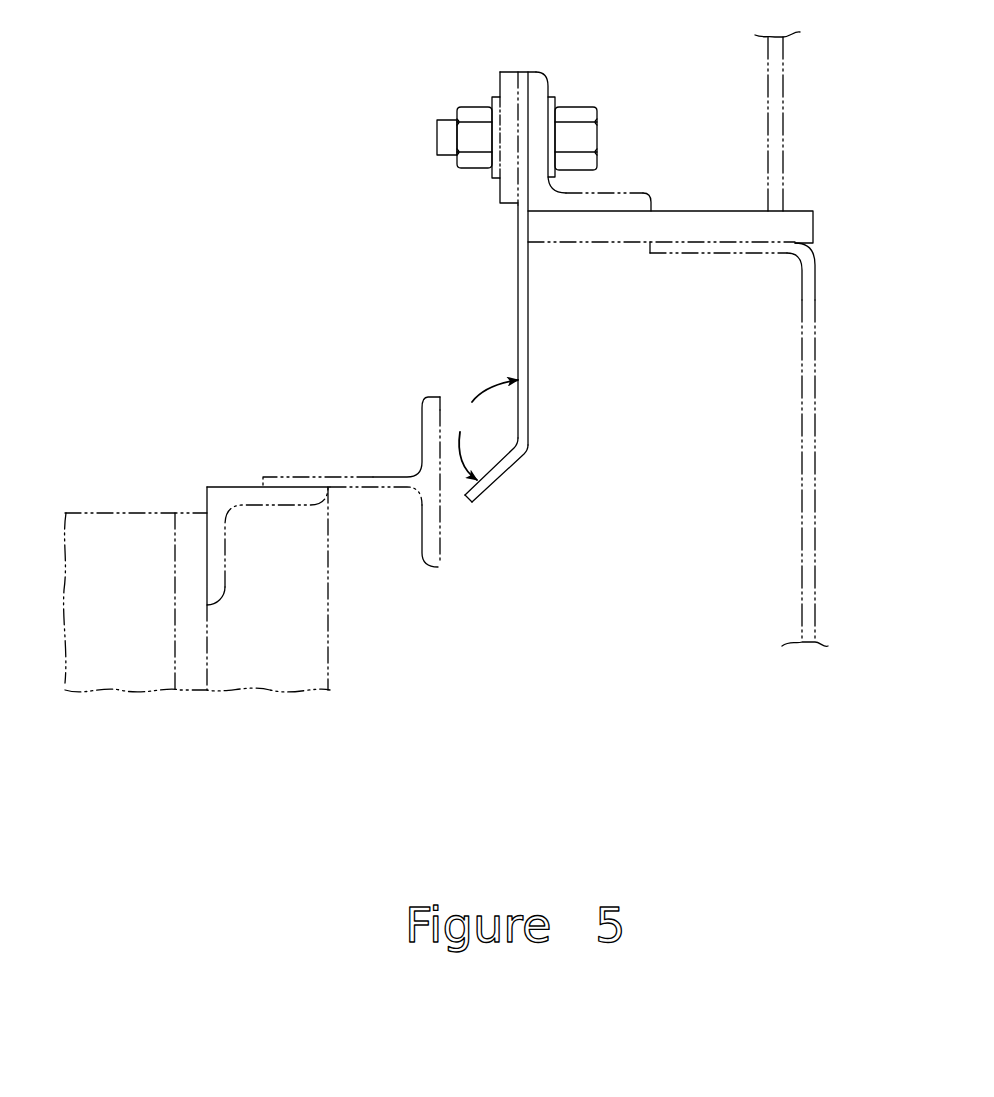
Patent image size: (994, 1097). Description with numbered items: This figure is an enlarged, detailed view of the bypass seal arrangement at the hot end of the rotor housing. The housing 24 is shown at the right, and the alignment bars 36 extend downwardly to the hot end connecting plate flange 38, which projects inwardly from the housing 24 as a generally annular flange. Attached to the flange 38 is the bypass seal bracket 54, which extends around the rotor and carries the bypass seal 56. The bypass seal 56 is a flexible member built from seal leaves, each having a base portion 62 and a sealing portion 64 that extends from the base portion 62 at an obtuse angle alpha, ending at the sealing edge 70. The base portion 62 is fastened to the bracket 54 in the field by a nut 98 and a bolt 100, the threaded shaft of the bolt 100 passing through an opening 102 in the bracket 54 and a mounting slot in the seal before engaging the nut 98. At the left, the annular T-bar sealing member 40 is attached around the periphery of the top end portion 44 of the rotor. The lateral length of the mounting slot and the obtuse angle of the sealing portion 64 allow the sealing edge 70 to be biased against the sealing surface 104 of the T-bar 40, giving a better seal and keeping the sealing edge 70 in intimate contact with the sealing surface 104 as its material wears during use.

The housing 24 is at (788, 348).
The alignment bars 36 is at (783, 105).
The hot end connecting plate flange 38 is at (788, 230).
The T-bar sealing member 40 is at (397, 473).
The top end portion of the rotor 44 is at (143, 538).
The bypass seal bracket 54 is at (628, 195).
The bypass seal 56 is at (590, 307).
The base portion 62 is at (527, 340).
The sealing portion 64 is at (527, 490).
The sealing edge 70 is at (467, 500).
The nut 98 is at (472, 115).
The bolt 100 is at (588, 117).
The opening 102 is at (553, 97).
The sealing surface 104 is at (438, 567).